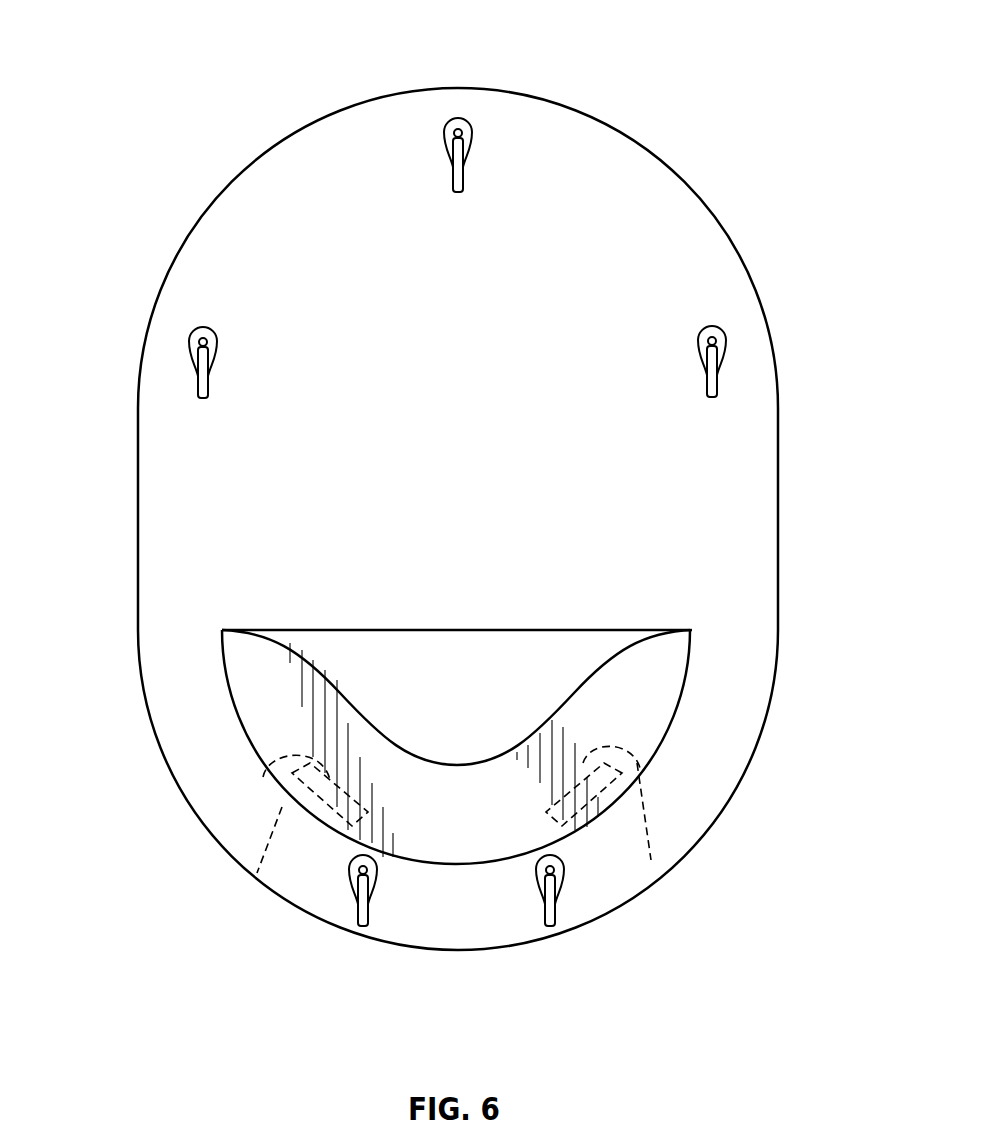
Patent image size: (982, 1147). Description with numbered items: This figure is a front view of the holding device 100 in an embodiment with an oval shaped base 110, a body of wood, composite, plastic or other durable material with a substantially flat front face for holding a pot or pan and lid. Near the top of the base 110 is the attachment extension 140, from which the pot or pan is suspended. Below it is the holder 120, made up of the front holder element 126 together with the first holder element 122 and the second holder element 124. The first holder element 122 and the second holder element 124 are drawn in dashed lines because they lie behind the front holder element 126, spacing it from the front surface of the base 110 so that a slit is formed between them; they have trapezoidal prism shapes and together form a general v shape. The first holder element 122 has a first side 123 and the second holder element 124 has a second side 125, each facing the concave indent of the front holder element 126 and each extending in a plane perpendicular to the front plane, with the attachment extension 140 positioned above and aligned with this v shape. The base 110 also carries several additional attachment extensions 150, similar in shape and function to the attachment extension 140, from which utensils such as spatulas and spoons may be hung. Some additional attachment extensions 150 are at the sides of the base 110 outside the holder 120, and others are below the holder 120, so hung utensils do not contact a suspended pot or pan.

The holding device 100 is at (608, 26).
The base 110 is at (192, 513).
The holder 120 is at (262, 705).
The first holder element 122 is at (257, 873).
The first side 123 is at (263, 777).
The second holder element 124 is at (651, 860).
The second side 125 is at (640, 768).
The front holder element 126 is at (246, 667).
The attachment extension 140 is at (452, 133).
The additional attachment extensions 150 is at (198, 339).